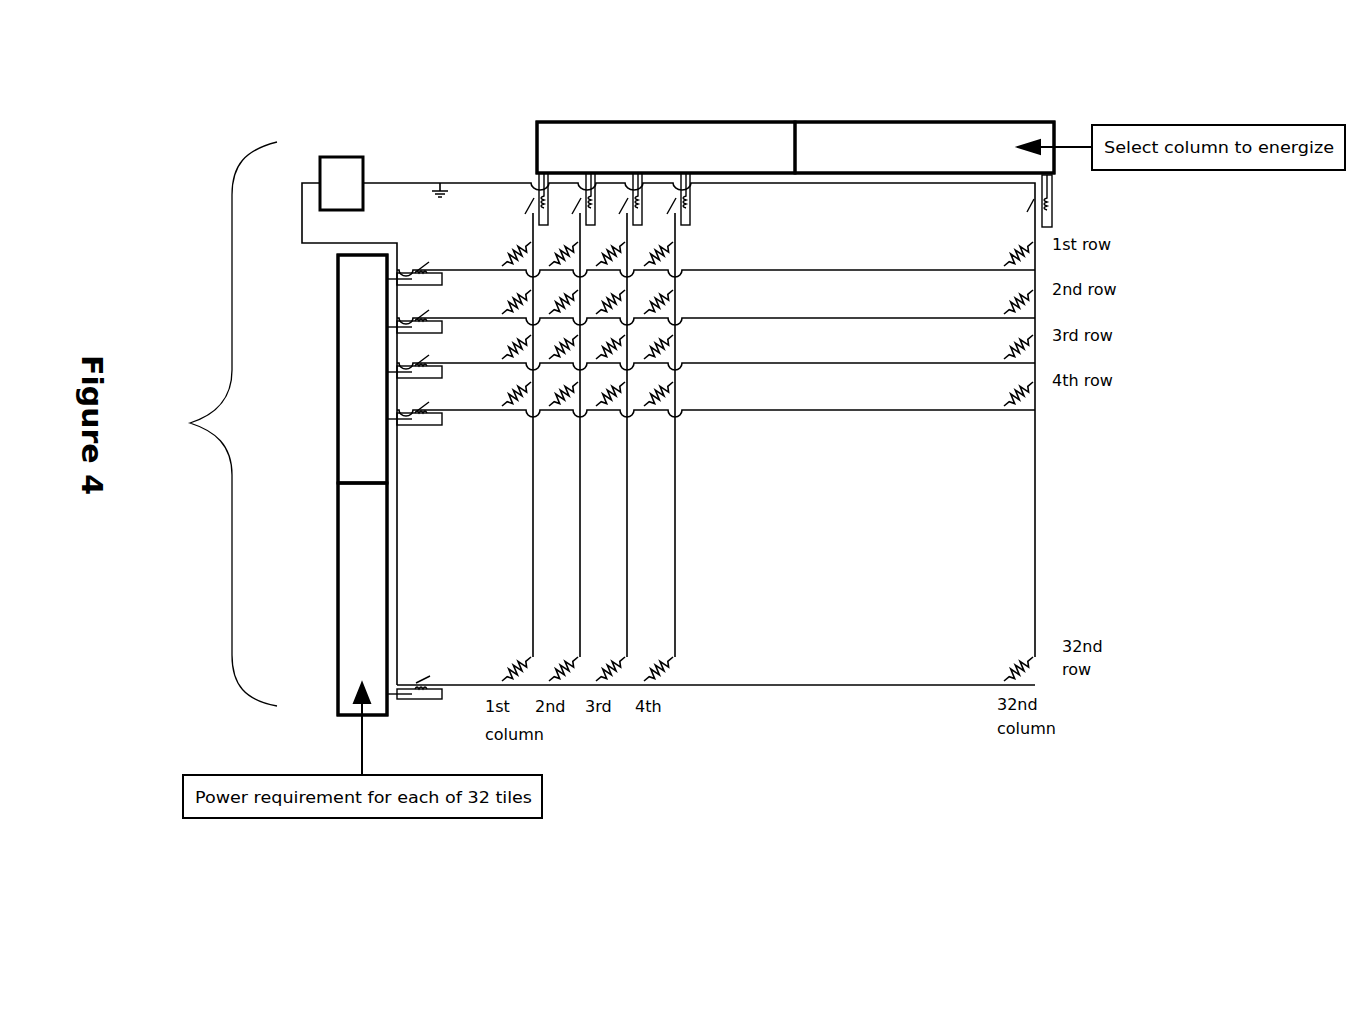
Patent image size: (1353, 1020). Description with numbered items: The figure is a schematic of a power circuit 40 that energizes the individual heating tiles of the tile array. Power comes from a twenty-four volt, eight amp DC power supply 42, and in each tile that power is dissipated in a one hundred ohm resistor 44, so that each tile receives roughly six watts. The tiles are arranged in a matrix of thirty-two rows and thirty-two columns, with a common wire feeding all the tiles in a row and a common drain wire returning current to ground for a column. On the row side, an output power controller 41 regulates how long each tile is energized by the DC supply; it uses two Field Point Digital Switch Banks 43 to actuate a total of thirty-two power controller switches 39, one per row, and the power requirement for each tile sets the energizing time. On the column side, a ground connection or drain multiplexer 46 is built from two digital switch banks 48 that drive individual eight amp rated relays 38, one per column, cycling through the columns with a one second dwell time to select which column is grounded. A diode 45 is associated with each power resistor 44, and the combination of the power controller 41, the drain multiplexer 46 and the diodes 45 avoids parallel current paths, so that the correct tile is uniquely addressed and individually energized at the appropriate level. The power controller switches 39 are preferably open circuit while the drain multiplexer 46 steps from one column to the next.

The relay 38 is at (690, 209).
The power controller switch 39 is at (437, 677).
The power circuit 40 is at (218, 424).
The output power controller 41 is at (337, 512).
The DC power supply 42 is at (345, 174).
The Field Point Digital Switch Bank 43 is at (358, 378).
The resistor 44 is at (667, 684).
The diode 45 is at (672, 660).
The drain multiplexer 46 is at (912, 122).
The digital switch bank 48 is at (680, 138).